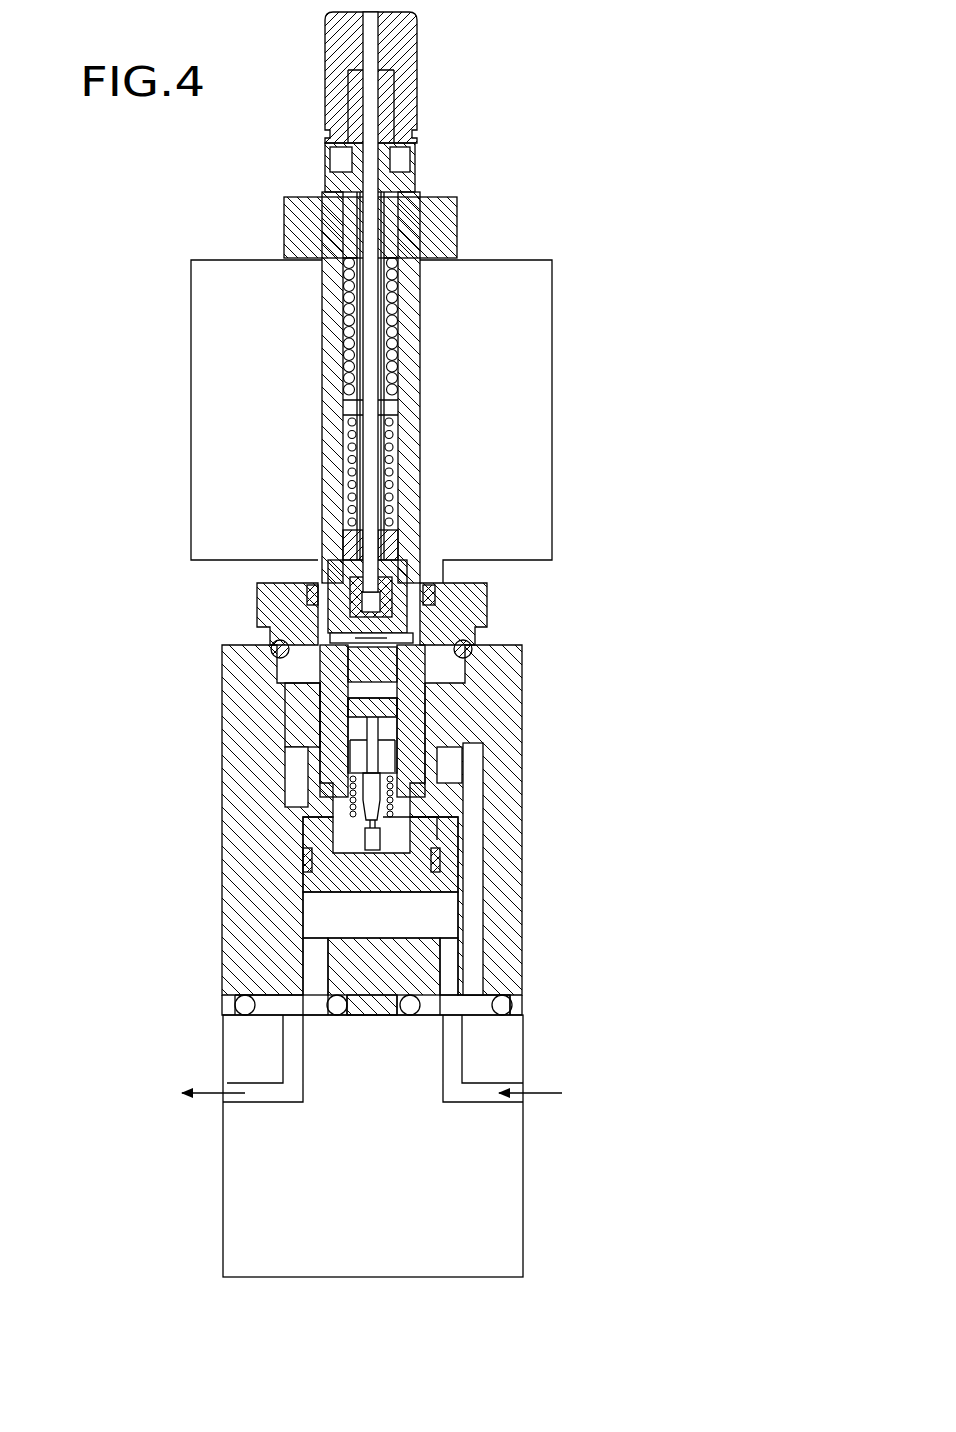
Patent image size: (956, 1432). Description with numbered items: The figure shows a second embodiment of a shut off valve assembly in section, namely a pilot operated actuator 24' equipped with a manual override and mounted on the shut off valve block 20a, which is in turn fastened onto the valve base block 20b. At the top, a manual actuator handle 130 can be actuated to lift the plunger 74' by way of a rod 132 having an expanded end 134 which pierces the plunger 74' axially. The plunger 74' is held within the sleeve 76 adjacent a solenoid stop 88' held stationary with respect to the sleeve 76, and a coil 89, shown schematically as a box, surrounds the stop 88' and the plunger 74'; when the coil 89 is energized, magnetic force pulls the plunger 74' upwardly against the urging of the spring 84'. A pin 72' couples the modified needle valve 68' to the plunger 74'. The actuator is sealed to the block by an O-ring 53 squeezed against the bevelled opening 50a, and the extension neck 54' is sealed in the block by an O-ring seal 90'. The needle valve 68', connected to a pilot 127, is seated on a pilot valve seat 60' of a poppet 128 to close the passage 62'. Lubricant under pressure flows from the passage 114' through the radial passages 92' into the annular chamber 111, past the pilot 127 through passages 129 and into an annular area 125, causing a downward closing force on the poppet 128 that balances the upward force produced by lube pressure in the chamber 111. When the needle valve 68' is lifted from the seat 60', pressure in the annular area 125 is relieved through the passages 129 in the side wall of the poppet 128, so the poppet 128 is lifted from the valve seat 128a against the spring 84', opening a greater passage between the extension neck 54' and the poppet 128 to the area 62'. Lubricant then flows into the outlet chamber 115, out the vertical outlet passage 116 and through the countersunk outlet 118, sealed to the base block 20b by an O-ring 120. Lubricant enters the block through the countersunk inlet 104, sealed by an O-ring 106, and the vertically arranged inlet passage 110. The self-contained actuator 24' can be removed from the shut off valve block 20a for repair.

The manual actuator handle 130 is at (405, 72).
The rod 132 is at (368, 185).
The solenoid stop 88' is at (427, 235).
The coil 89 is at (552, 305).
The pilot operated actuator 24' is at (643, 335).
The spring 84' is at (482, 387).
The plunger 74' is at (495, 489).
The pin 72' is at (520, 590).
The expanded end 134 is at (340, 528).
The sleeve 76 is at (316, 575).
The O-ring 53 is at (257, 603).
The bevelled opening 50a is at (269, 645).
The annular area 125 is at (488, 607).
The passages 129 is at (436, 700).
The poppet 128 is at (320, 722).
The pilot 127 is at (410, 688).
The passage 114' is at (509, 735).
The annular chamber 111 is at (295, 790).
The O-ring seal 90' is at (228, 795).
The radial passages 92' is at (523, 796).
The pilot valve seat 60' is at (256, 811).
The modified needle valve 68' is at (514, 826).
The passage 62' is at (281, 875).
The extension neck 54' is at (467, 854).
The outlet chamber 115 is at (363, 931).
The valve seat 128a is at (384, 963).
The vertical outlet passage 116 is at (310, 953).
The inlet passage 110 is at (470, 915).
The countersunk outlet 118 is at (270, 1003).
The O-ring 120 is at (225, 1007).
The countersunk inlet 104 is at (487, 1002).
The O-ring 106 is at (507, 1005).
The shut off valve block 20a is at (505, 930).
The valve base block 20b is at (470, 1165).